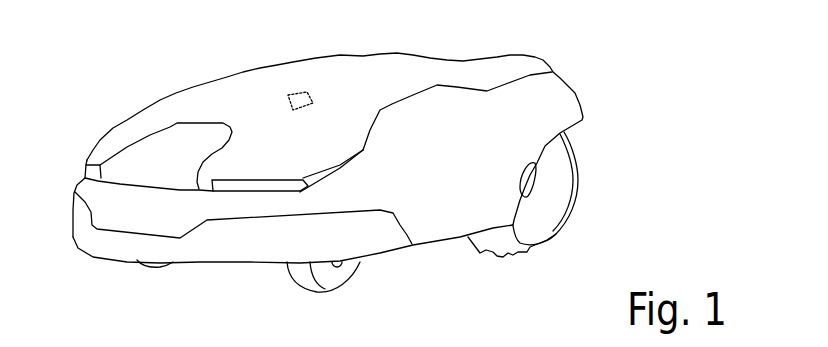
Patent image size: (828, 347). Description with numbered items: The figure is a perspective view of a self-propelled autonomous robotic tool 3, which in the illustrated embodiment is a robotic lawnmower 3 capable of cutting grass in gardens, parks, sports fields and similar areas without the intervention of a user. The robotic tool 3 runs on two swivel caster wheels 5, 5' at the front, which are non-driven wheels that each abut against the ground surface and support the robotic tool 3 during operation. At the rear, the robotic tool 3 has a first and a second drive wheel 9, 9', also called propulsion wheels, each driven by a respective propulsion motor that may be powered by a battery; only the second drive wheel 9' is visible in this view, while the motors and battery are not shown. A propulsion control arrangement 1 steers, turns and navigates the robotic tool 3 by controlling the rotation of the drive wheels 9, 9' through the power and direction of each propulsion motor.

The propulsion control arrangement 1 is at (290, 93).
The self-propelled autonomous robotic tool 3 is at (203, 44).
The swivel caster wheel 5 is at (135, 282).
The swivel caster wheel 5' is at (294, 291).
The first drive wheel 9 is at (293, 275).
The second drive wheel 9' is at (528, 214).